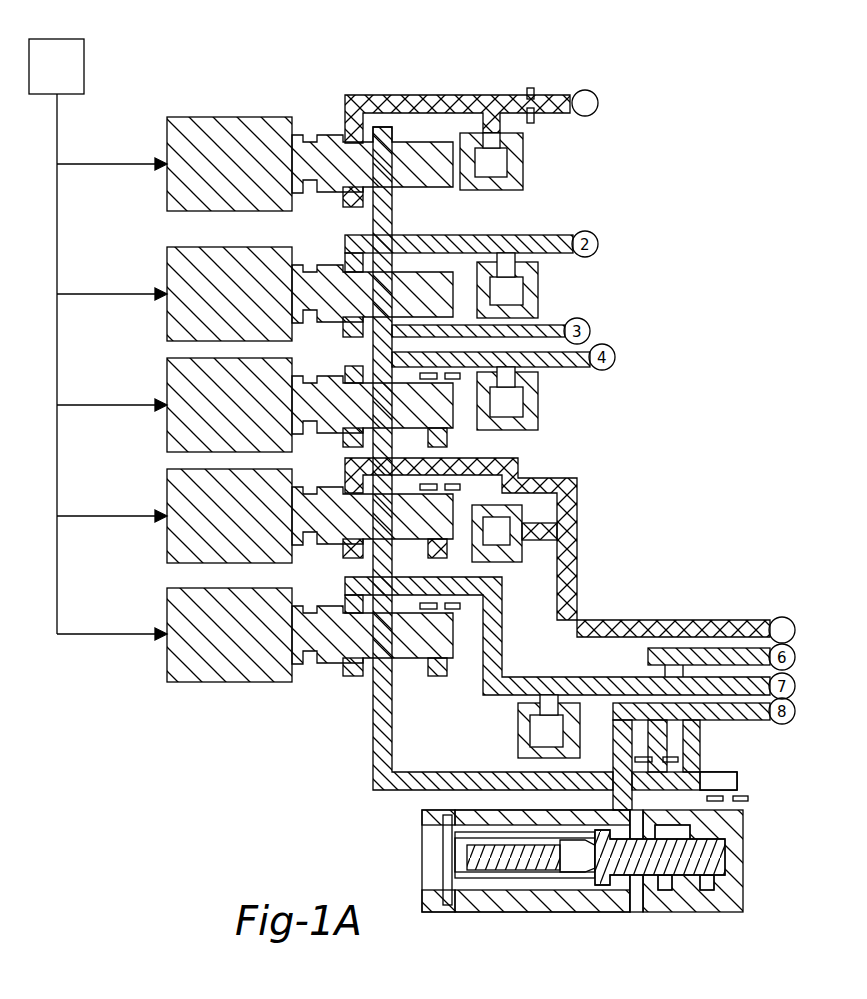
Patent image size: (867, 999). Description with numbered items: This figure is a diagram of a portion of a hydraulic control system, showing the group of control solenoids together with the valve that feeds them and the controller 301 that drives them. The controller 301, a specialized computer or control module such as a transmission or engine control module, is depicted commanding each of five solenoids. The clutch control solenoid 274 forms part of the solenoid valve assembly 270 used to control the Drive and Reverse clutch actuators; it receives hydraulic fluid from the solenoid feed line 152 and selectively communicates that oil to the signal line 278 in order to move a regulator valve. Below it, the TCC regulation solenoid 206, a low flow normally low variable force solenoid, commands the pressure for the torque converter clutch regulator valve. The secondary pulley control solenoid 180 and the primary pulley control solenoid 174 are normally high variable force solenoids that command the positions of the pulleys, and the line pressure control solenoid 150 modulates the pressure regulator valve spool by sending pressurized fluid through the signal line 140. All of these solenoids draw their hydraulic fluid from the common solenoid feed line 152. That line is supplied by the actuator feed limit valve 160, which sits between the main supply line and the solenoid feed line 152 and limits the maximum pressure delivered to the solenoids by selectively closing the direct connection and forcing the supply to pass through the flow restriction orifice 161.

The solenoid valve assembly 270 is at (204, 42).
The controller 301 is at (72, 78).
The clutch control solenoid 274 is at (166, 148).
The TCC regulation solenoid 206 is at (166, 278).
The secondary pulley control solenoid 180 is at (166, 376).
The primary pulley control solenoid 174 is at (166, 518).
The line pressure control solenoid 150 is at (166, 636).
The signal line 278 is at (384, 95).
The signal line 140 is at (500, 653).
The solenoid feed line 152 is at (372, 739).
The flow restriction orifice 161 is at (680, 763).
The actuator feed limit valve 160 is at (652, 880).